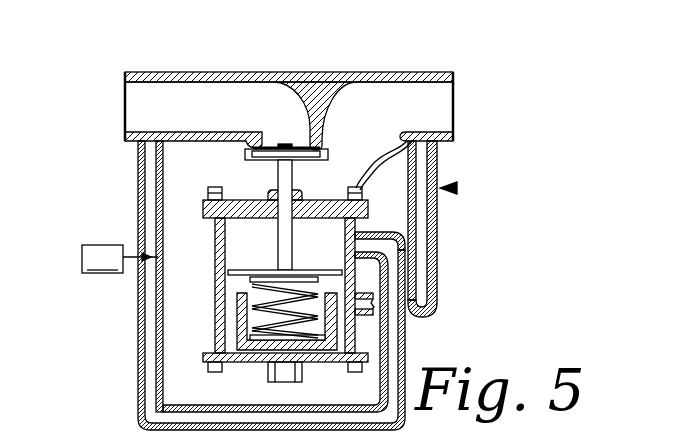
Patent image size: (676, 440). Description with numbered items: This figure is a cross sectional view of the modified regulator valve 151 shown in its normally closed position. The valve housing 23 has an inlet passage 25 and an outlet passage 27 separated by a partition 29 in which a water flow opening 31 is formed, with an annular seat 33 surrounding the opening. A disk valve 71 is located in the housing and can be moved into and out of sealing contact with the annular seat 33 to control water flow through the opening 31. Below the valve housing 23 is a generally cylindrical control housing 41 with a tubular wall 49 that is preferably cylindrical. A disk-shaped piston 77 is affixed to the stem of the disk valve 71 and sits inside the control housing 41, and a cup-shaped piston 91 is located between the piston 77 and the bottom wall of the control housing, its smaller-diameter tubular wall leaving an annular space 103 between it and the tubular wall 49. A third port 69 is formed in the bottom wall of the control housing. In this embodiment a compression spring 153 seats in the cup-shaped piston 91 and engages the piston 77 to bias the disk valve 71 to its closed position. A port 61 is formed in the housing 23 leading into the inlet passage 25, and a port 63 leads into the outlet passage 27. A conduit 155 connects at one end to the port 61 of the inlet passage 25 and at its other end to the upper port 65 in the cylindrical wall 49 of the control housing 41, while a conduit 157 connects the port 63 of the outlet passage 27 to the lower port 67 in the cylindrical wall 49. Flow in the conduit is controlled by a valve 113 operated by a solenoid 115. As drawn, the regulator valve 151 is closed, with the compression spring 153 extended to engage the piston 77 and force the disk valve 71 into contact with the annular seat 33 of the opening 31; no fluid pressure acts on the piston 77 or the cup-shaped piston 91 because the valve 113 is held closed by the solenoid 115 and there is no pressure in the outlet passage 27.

The housing 23 is at (318, 85).
The inlet passage 25 is at (143, 104).
The outlet passage 27 is at (440, 105).
The partition 29 is at (210, 133).
The water flow opening 31 is at (263, 145).
The annular seat 33 is at (319, 154).
The disk valve 71 is at (328, 148).
The port 61 is at (158, 142).
The port 63 is at (437, 150).
The modified regulator valve 151 is at (457, 188).
The conduit 157 is at (420, 212).
The upper port 65 is at (375, 240).
The tubular wall 49 is at (360, 263).
The disk-shaped piston 77 is at (240, 270).
The lower port 67 is at (355, 330).
The cup-shaped piston 91 is at (352, 338).
The control housing 41 is at (216, 299).
The annular space 103 is at (240, 318).
The valve 113 is at (140, 272).
The solenoid 115 is at (102, 259).
The conduit 155 is at (148, 373).
The compression spring 153 is at (250, 362).
The third port 69 is at (272, 364).